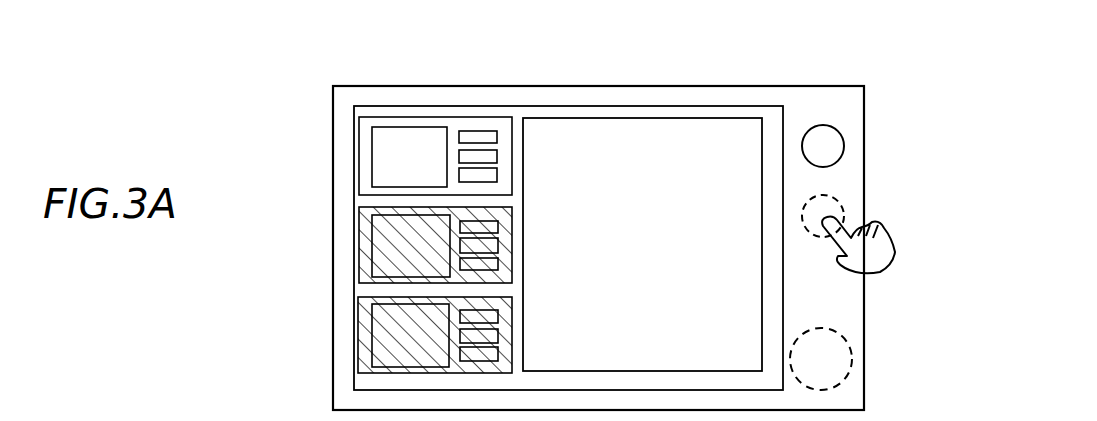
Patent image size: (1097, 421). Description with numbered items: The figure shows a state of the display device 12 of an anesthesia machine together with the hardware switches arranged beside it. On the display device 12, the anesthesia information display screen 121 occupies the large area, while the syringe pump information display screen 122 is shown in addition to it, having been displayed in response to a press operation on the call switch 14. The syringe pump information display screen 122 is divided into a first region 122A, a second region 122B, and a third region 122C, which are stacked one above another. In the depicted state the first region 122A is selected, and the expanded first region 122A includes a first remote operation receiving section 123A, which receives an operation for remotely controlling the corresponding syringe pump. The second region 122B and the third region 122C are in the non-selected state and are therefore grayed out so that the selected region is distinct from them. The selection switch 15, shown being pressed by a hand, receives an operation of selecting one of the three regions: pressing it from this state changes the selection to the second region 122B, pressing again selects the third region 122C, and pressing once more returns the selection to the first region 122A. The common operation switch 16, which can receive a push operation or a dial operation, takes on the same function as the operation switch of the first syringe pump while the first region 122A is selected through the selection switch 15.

The display device 12 is at (893, 101).
The call switch 14 is at (830, 145).
The selection switch 15 is at (833, 210).
The common operation switch 16 is at (848, 355).
The anesthesia information display screen 121 is at (636, 130).
The syringe pump information display screen 122 is at (441, 108).
The first region 122A is at (362, 158).
The second region 122B is at (358, 252).
The third region 122C is at (365, 330).
The first remote operation receiving section 123A is at (512, 172).